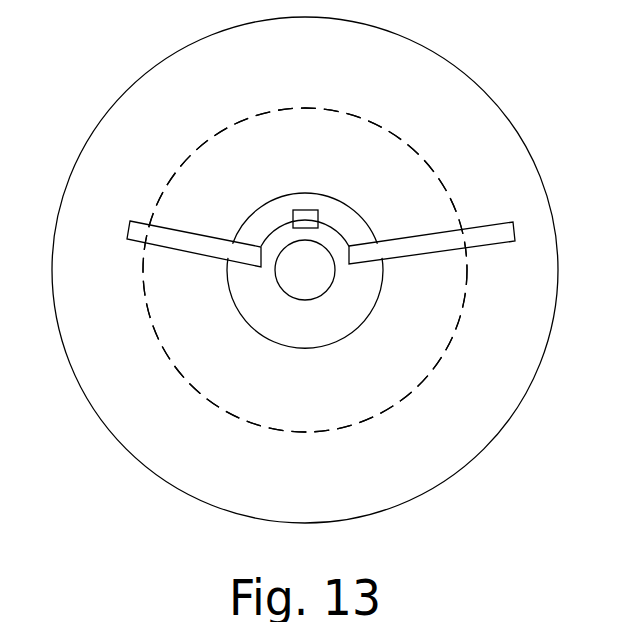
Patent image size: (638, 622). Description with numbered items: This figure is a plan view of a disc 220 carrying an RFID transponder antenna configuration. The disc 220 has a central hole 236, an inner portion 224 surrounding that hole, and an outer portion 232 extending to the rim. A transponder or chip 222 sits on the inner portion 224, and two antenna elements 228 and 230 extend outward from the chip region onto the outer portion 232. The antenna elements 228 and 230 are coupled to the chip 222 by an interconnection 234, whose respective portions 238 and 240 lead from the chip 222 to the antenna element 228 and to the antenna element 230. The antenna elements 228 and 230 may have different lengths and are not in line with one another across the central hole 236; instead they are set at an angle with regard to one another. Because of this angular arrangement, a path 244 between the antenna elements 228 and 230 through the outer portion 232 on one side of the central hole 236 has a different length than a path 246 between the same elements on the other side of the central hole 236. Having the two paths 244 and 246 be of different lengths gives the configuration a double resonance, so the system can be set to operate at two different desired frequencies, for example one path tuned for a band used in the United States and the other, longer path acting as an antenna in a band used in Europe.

The disc 220 is at (443, 55).
The transponder or chip 222 is at (307, 218).
The inner portion 224 is at (335, 332).
The antenna element 228 is at (131, 230).
The antenna element 230 is at (515, 232).
The outer portion 232 is at (288, 70).
The interconnection 234 is at (304, 207).
The central hole 236 is at (287, 282).
The portion of interconnection 238 is at (266, 229).
The portion of interconnection 240 is at (349, 213).
The path 244 is at (347, 110).
The path 246 is at (392, 408).